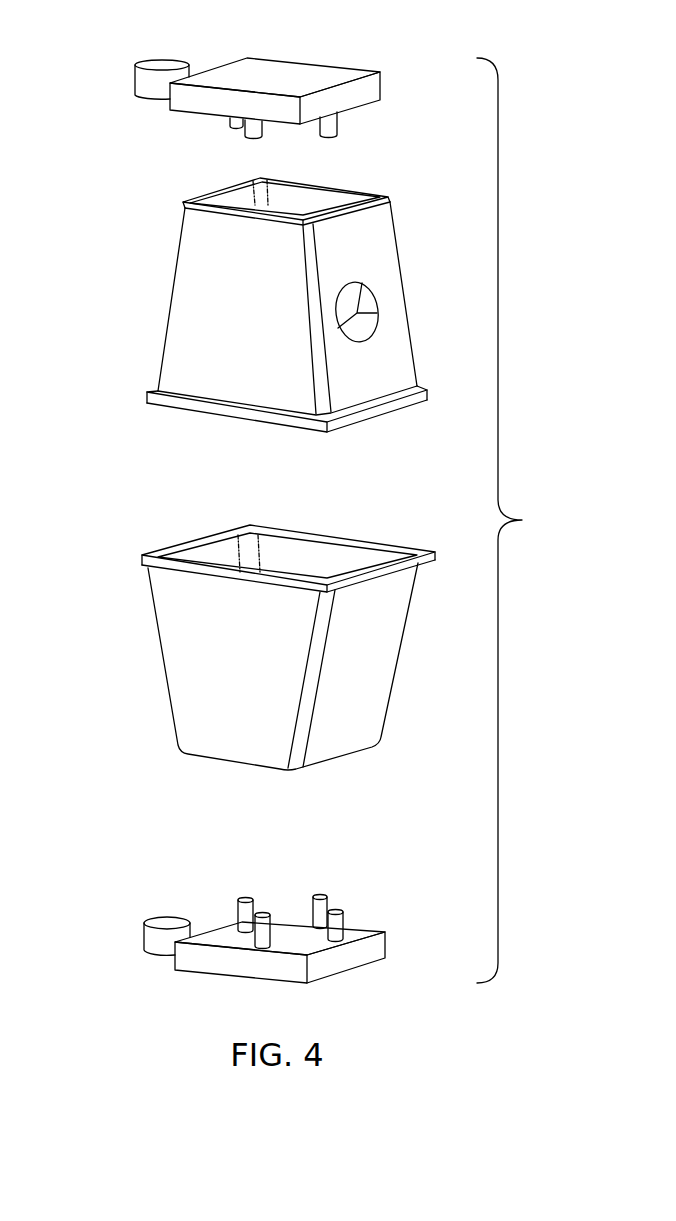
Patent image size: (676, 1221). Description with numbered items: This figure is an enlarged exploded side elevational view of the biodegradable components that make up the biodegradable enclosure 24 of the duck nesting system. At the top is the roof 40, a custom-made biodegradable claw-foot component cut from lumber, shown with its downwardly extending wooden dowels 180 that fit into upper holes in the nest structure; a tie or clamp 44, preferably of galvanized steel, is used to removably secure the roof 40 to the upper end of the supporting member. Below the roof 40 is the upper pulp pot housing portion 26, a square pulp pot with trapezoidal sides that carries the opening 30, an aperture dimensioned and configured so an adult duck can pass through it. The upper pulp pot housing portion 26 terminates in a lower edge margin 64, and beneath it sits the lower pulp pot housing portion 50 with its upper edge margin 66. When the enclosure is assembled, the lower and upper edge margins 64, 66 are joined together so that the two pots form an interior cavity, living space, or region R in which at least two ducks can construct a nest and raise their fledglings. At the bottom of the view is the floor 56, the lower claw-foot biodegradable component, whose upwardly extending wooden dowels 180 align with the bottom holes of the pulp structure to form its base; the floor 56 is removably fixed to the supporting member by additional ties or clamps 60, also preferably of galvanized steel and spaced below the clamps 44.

The biodegradable enclosure 24 is at (516, 520).
The upper pulp pot housing portion 26 is at (153, 282).
The opening 30 is at (367, 303).
The roof 40 is at (257, 68).
The ties or clamps 44 is at (135, 78).
The lower pulp pot housing portion 50 is at (155, 673).
The floor 56 is at (353, 927).
The ties or clamps 60 is at (143, 937).
The lower edge margin 64 is at (150, 389).
The upper edge margin 66 is at (175, 548).
The wooden dowels 180 is at (325, 133).
The interior region R is at (292, 546).